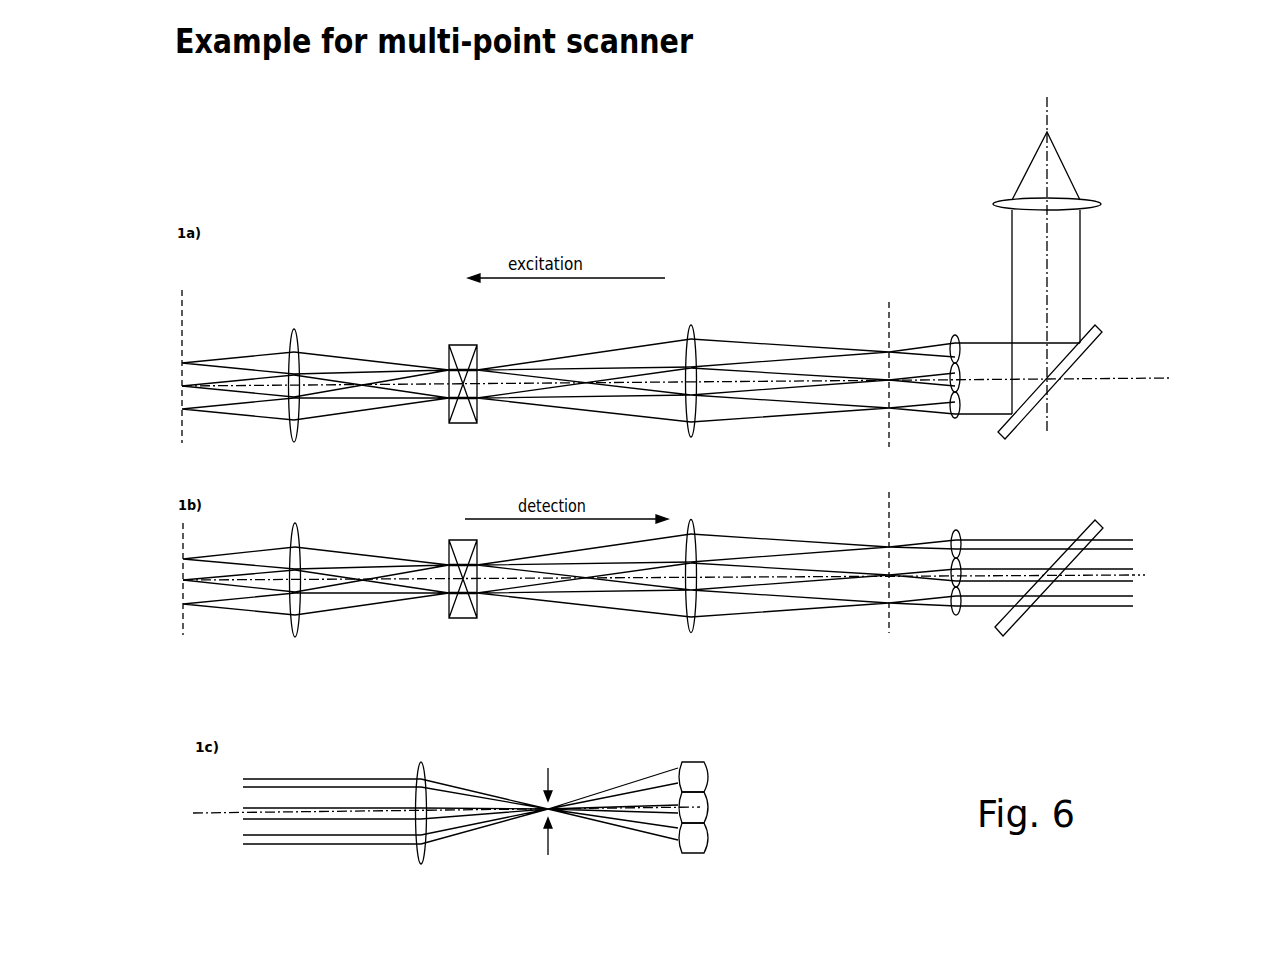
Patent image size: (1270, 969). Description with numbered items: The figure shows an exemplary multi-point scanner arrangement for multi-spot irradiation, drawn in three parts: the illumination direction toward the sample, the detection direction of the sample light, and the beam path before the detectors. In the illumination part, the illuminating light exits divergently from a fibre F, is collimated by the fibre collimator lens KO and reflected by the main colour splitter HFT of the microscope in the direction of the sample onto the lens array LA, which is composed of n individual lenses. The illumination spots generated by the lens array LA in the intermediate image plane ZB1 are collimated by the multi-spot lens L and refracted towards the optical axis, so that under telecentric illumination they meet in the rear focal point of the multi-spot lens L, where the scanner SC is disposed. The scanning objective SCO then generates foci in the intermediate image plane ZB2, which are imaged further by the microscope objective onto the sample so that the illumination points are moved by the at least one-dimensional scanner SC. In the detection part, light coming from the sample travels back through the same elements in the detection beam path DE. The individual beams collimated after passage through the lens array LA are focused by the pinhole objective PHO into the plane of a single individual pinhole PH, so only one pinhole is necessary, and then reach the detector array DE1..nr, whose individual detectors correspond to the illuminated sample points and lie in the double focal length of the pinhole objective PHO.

The intermediate image plane ZB2 is at (181, 447).
The scanning objective SCO is at (300, 468).
The scanner SC is at (463, 459).
The multi-spot lens L is at (688, 461).
The intermediate image plane ZB1 is at (876, 452).
The lens array LA is at (948, 454).
The fibre collimator lens KO is at (1022, 265).
The fibre F is at (894, 106).
The main colour splitter HFT is at (1071, 379).
The detection beam path DE is at (1083, 578).
The pinhole objective PHO is at (410, 792).
The individual pinhole PH is at (551, 790).
The detector array DE1..nr is at (711, 828).